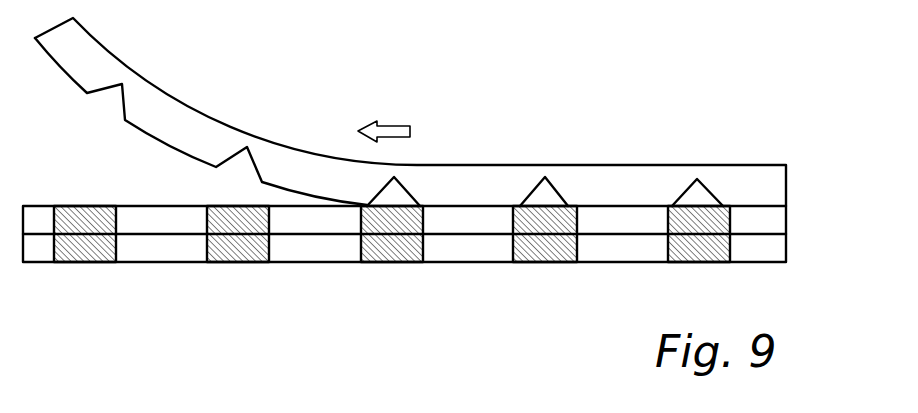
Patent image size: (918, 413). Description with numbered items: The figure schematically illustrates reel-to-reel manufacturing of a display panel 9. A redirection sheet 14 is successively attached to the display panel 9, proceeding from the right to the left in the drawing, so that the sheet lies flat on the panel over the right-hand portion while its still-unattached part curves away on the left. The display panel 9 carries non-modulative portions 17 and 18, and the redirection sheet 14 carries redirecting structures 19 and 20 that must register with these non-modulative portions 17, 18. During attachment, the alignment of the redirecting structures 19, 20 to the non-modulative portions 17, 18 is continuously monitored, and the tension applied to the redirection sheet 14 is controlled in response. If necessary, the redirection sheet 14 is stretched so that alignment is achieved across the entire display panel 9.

The display panel 9 is at (805, 212).
The redirection sheet 14 is at (310, 163).
The non-modulative portion 17 is at (388, 253).
The non-modulative portion 18 is at (547, 251).
The redirecting structure 19 is at (403, 187).
The redirecting structure 20 is at (533, 193).